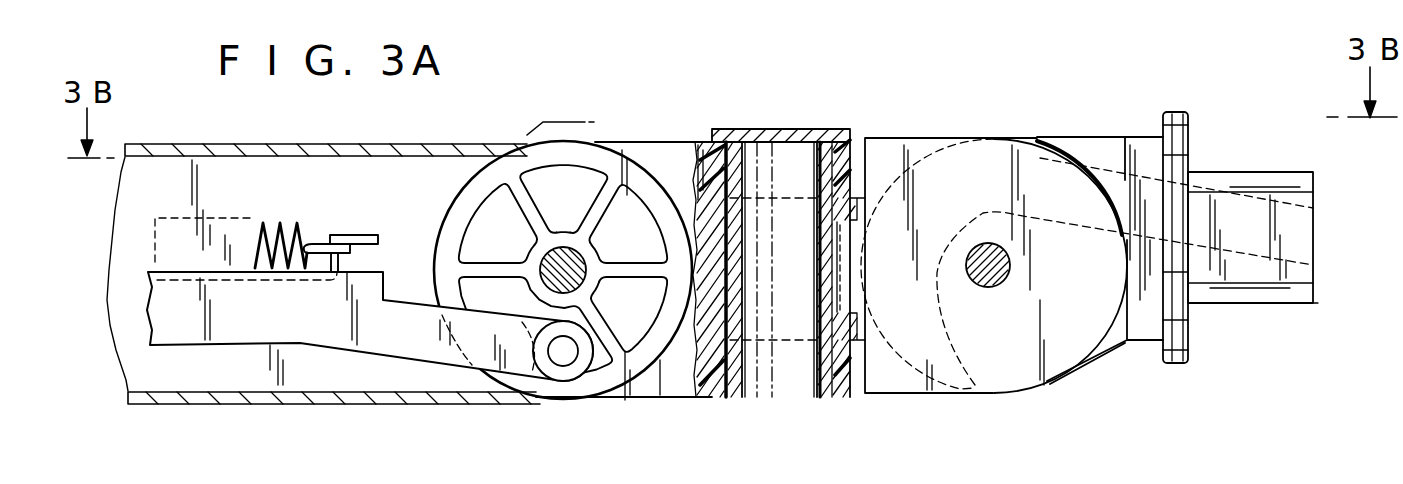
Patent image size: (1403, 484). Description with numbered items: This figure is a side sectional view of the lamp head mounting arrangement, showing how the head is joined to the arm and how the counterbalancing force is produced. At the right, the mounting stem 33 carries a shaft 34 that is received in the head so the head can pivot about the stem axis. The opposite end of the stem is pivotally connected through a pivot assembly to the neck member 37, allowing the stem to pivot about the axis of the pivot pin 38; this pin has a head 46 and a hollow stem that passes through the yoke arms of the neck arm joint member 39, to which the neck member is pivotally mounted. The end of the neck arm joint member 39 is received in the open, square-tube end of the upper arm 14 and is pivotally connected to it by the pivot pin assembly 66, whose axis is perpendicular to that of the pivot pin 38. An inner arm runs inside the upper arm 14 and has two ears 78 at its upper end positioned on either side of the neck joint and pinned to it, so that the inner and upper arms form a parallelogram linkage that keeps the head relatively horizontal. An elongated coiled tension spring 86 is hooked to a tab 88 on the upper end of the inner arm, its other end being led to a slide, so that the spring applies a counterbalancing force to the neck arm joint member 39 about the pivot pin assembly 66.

The upper arm 14 is at (177, 146).
The mounting stem 33 is at (1113, 137).
The shaft 34 is at (1217, 172).
The neck member 37 is at (880, 393).
The pivot pin 38 is at (816, 168).
The neck arm joint member 39 is at (630, 142).
The head of pivot pin 46 is at (735, 133).
The pivot pin assembly 66 is at (581, 259).
The ears 78 is at (430, 342).
The coiled tension spring 86 is at (280, 220).
The tab 88 is at (360, 237).